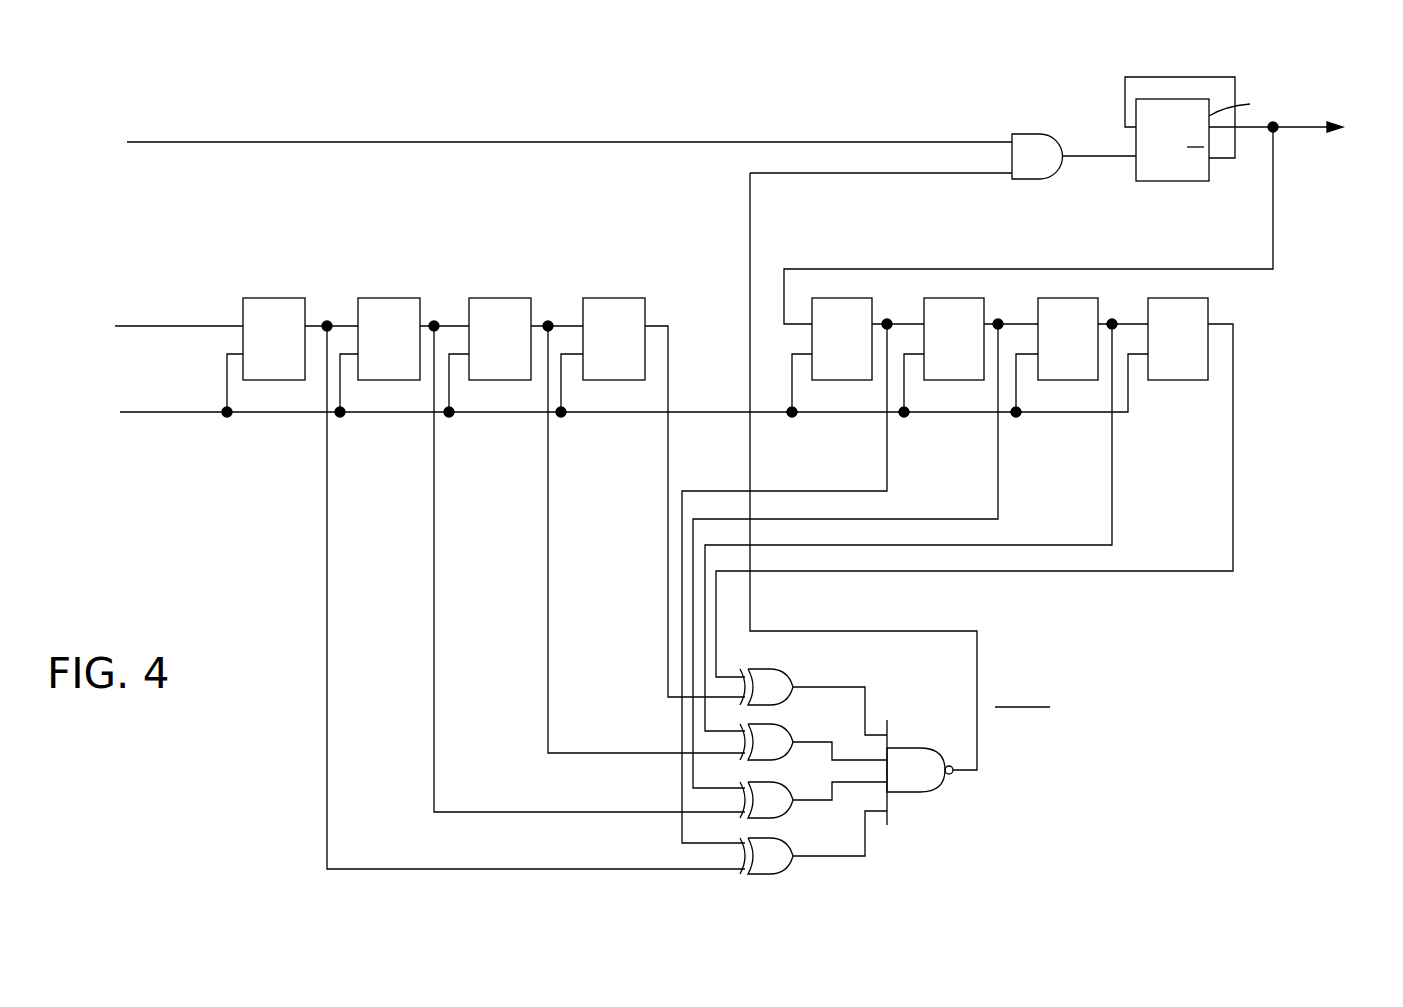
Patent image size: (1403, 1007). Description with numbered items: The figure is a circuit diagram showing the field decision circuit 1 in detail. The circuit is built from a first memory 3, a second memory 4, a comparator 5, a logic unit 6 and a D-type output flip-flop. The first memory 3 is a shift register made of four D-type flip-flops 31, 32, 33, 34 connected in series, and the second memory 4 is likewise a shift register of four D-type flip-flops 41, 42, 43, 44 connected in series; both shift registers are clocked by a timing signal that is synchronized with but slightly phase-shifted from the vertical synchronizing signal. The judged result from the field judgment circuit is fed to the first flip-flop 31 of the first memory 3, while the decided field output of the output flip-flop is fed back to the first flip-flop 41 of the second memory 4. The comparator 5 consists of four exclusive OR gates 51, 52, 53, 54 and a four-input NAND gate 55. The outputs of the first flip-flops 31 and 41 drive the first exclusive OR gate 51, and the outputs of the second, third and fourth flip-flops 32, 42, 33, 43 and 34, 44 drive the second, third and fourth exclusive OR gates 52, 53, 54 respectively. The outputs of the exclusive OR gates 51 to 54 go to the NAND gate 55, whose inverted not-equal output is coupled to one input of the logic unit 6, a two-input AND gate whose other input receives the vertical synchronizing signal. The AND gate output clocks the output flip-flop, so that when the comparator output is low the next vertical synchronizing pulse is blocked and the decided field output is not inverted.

The field decision circuit 1 is at (1165, 706).
The first memory 3 is at (465, 255).
The second memory 4 is at (1245, 304).
The comparator 5 is at (898, 851).
The logic unit 6 is at (1038, 133).
The first flip-flop 31 is at (255, 298).
The second flip-flop 32 is at (380, 298).
The third flip-flop 33 is at (503, 298).
The fourth flip-flop 34 is at (630, 298).
The first flip-flop 41 is at (848, 380).
The second flip-flop 42 is at (968, 380).
The third flip-flop 43 is at (1085, 380).
The fourth flip-flop 44 is at (1198, 380).
The first exclusive OR gate 51 is at (768, 873).
The second exclusive OR gate 52 is at (782, 812).
The third exclusive OR gate 53 is at (787, 730).
The fourth exclusive OR gate 54 is at (787, 673).
The four-input NAND gate 55 is at (917, 793).